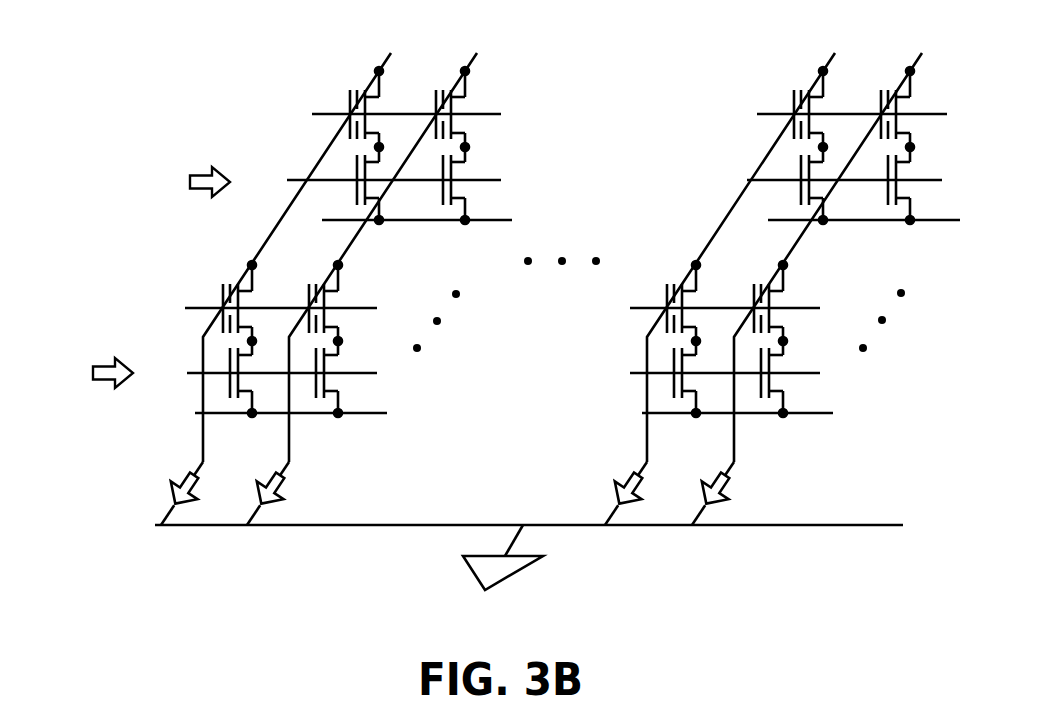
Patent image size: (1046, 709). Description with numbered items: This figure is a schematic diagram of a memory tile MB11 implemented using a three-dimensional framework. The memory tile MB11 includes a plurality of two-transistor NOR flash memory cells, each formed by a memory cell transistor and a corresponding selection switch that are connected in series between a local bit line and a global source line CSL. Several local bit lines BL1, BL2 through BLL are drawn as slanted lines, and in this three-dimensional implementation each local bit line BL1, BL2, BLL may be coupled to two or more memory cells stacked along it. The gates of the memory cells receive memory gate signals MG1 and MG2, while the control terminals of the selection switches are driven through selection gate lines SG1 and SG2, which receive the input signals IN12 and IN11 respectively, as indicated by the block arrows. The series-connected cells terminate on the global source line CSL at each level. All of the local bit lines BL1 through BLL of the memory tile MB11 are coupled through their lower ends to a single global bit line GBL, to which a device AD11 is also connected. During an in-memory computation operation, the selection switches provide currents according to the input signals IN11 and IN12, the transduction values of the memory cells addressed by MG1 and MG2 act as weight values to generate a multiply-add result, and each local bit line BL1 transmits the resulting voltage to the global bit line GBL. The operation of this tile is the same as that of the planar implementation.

The memory tile MB11 is at (502, 323).
The local bit line BL1 is at (276, 281).
The local bit line BL2 is at (362, 281).
The local bit line BLL is at (818, 271).
The memory gate signal MG1 is at (479, 307).
The memory gate signal MG2 is at (605, 114).
The selection gate line SG1 is at (482, 372).
The selection gate line SG2 is at (591, 180).
The global source line CSL is at (577, 335).
The input signal IN11 is at (184, 182).
The input signal IN12 is at (89, 373).
The global bit line GBL is at (662, 527).
The amplifier/driver connected to global bit line AD11 is at (512, 566).